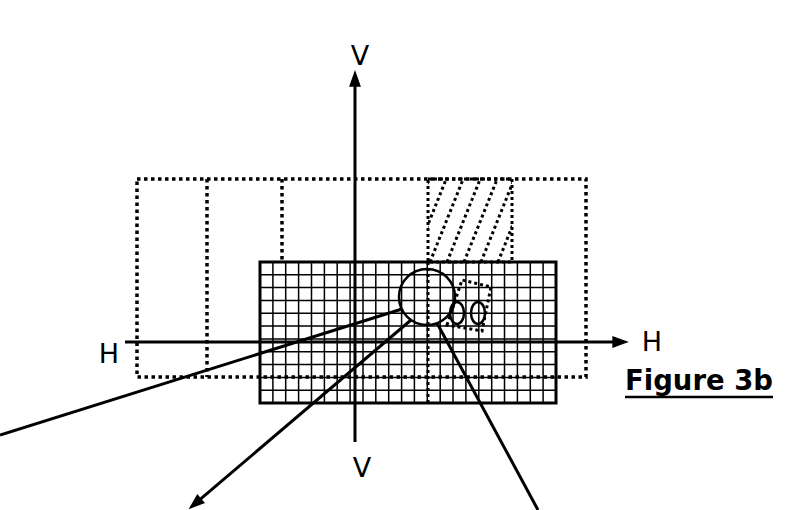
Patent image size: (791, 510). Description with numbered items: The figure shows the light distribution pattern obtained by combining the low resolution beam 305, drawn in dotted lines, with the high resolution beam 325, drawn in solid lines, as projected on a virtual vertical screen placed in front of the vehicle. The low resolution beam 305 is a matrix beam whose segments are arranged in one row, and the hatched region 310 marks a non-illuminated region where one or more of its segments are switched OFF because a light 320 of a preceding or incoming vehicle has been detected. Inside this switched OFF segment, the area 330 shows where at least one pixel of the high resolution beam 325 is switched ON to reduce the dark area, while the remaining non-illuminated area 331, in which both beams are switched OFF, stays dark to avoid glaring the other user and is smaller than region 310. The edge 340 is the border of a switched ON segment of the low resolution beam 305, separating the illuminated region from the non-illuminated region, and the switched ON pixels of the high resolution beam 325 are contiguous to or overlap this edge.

The low resolution beam 305 is at (179, 162).
The edge of a switched ON segment of the low resolution beam 340 is at (434, 173).
The hatched region 310 is at (472, 180).
The high resolution beam 325 is at (572, 258).
The area in which at least one pixel of the high resolution beam is switched ON 330 is at (481, 258).
The remaining non-illuminated area 331 is at (498, 284).
The light of a preceding or incoming vehicle 320 is at (461, 325).